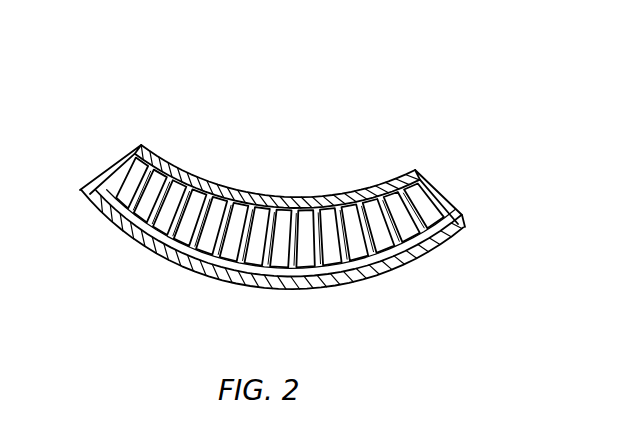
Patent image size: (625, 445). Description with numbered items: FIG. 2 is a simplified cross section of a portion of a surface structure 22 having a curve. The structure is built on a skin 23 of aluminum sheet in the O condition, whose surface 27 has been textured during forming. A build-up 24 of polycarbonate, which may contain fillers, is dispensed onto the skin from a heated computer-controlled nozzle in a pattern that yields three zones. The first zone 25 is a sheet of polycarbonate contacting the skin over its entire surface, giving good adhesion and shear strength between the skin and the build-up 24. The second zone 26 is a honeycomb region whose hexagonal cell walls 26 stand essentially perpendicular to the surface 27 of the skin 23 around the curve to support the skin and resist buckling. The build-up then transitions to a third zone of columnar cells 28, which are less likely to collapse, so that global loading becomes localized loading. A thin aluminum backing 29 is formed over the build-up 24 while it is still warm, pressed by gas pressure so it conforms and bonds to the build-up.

The surface structure 22 is at (368, 148).
The skin 23 is at (450, 238).
The build-up 24 is at (124, 133).
The first zone 25 is at (462, 216).
The second zone 26 is at (118, 210).
The surface of the skin 27 is at (125, 233).
The columnar cells 28 is at (425, 188).
The backing 29 is at (141, 144).